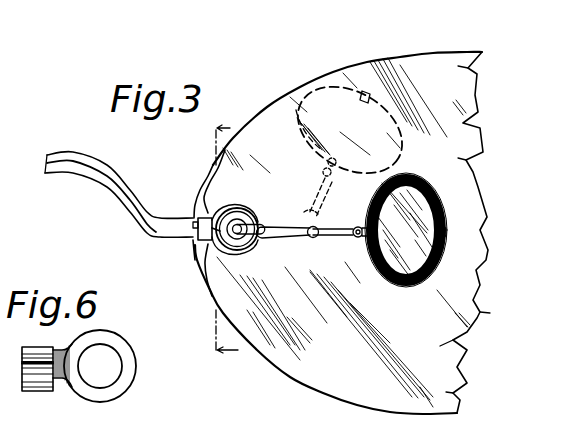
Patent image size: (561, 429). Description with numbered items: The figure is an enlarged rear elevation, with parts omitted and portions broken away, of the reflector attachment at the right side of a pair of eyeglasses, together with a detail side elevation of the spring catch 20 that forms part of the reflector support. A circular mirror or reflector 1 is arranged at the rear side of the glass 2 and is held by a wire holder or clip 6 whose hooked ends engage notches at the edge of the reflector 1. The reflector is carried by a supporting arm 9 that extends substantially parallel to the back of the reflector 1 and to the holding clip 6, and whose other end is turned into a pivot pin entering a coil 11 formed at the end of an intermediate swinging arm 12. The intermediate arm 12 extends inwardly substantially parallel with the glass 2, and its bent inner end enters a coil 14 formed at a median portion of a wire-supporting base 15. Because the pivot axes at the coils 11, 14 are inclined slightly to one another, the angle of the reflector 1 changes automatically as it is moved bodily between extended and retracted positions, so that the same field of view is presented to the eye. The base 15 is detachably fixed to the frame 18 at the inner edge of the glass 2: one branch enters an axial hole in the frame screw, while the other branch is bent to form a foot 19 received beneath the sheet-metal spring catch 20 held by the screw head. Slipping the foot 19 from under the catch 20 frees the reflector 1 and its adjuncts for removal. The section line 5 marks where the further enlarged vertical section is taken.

In FIG. 3, the circular mirror 1 is at (437, 198).
In FIG. 3, the glass 2 is at (341, 233).
In FIG. 3, the section line 5 is at (224, 241).
In FIG. 3, the holder or clip 6 is at (360, 226).
In FIG. 3, the supporting arm 9 is at (334, 237).
In FIG. 3, the coil 11 is at (311, 237).
In FIG. 3, the intermediate swinging arm 12 is at (286, 241).
In FIG. 3, the coil 14 is at (266, 229).
In FIG. 3, the wire-supporting base 15 is at (241, 226).
In FIG. 3, the frame 18 is at (168, 227).
In FIG. 3, the foot 19 is at (195, 218).
In FIG. 3, the spring catch 20 is at (226, 209).
In FIG. 6, the spring catch 20 is at (127, 380).